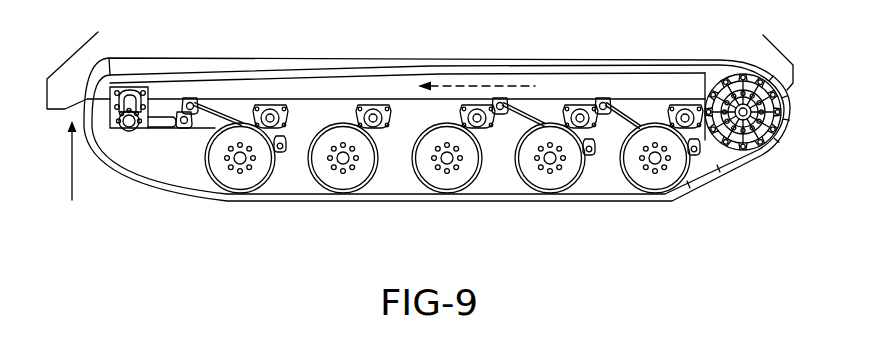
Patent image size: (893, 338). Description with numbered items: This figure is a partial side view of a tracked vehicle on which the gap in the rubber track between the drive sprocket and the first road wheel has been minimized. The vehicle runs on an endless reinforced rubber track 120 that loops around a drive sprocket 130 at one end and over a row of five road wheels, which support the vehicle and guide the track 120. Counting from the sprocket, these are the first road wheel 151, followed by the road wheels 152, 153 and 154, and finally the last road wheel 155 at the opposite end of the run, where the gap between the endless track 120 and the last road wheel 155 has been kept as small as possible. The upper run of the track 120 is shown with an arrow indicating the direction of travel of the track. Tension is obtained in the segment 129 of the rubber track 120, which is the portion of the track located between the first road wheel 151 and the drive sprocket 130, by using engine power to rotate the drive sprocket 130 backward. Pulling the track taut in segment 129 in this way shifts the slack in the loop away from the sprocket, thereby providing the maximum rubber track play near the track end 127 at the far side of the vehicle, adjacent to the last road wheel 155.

The endless reinforced rubber track 120 is at (553, 70).
The track end 127 is at (90, 90).
The track segment 129 is at (739, 174).
The drive sprocket 130 is at (722, 78).
The first road wheel 151 is at (615, 163).
The road wheel 152 is at (511, 160).
The road wheel 153 is at (407, 159).
The road wheel 154 is at (302, 159).
The last road wheel 155 is at (198, 154).